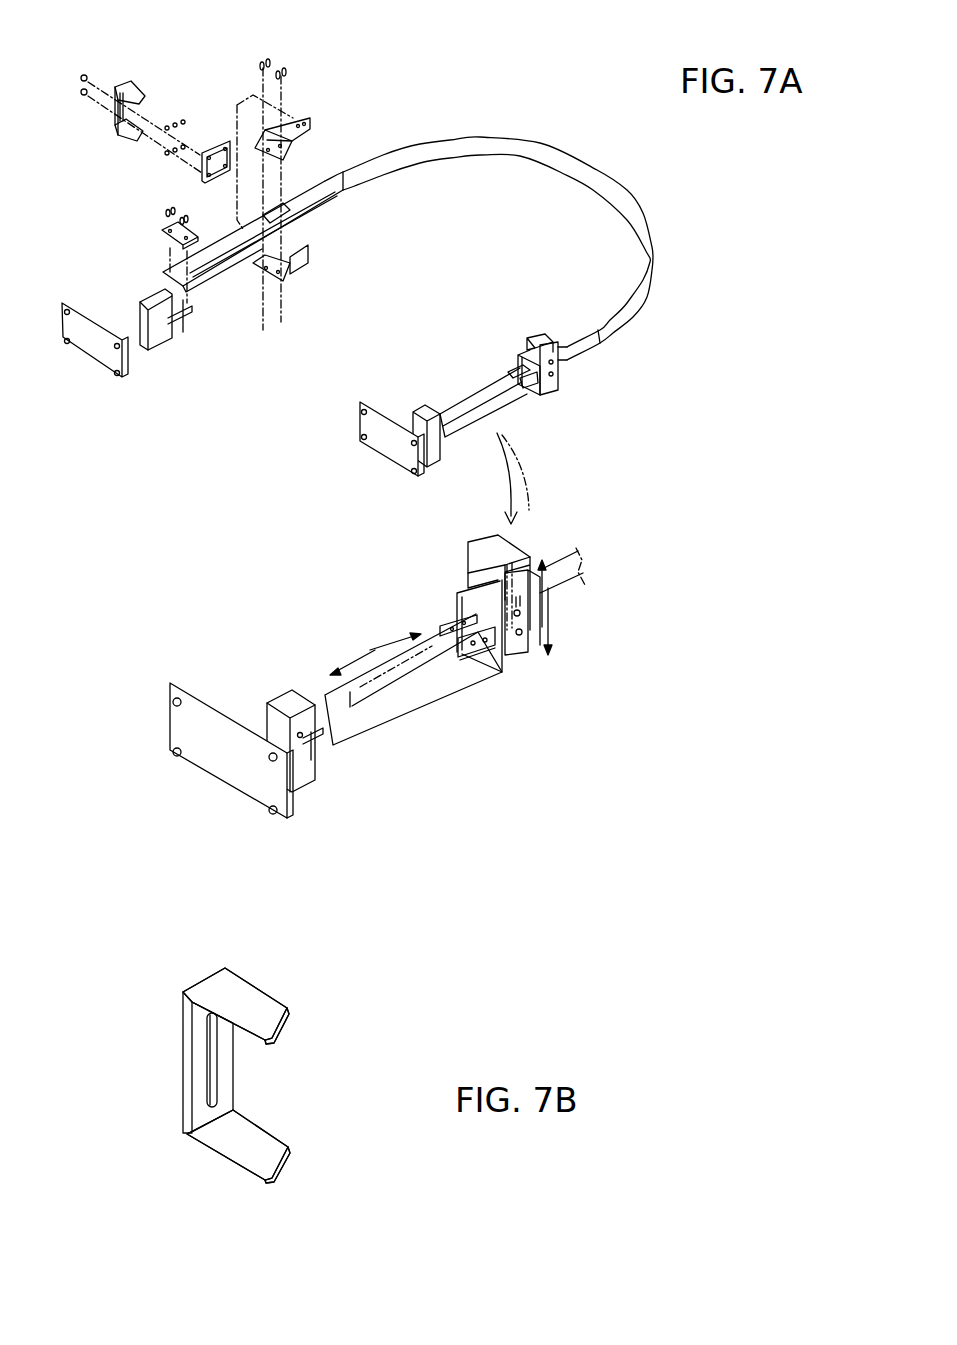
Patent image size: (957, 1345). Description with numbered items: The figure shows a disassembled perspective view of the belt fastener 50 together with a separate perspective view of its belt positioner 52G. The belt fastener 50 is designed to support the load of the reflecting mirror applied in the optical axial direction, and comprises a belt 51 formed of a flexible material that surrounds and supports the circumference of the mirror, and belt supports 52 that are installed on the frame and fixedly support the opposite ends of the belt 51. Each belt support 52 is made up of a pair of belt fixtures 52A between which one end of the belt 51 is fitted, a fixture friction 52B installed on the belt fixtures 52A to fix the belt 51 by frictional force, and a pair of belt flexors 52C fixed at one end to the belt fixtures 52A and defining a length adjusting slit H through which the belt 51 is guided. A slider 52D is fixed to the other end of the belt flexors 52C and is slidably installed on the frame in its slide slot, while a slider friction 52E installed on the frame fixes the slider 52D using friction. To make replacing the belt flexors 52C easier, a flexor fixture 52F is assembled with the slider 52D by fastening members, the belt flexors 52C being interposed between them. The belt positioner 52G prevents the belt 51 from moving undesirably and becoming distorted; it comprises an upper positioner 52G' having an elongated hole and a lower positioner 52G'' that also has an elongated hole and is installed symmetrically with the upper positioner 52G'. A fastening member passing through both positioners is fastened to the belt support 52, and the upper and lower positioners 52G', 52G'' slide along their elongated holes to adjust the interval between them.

In FIG. 7A, the belt fastener 50 is at (476, 72).
In FIG. 7A, the belt 51 is at (550, 157).
In FIG. 7A, the belt support 52 is at (462, 378).
In FIG. 7B, the belt support 52 is at (149, 1024).
In FIG. 7A, the belt fixtures 52A is at (297, 133).
In FIG. 7A, the fixture friction 52B is at (228, 141).
In FIG. 7A, the belt flexors 52C is at (222, 258).
In FIG. 7A, the slider 52D is at (180, 330).
In FIG. 7A, the slider friction 52E is at (128, 360).
In FIG. 7A, the flexor fixture 52F is at (165, 226).
In FIG. 7A, the belt positioner 52G is at (303, 355).
In FIG. 7B, the upper positioner 52G' is at (257, 988).
In FIG. 7B, the lower positioner 52G'' is at (219, 1175).
In FIG. 7A, the length adjusting slit H is at (210, 270).